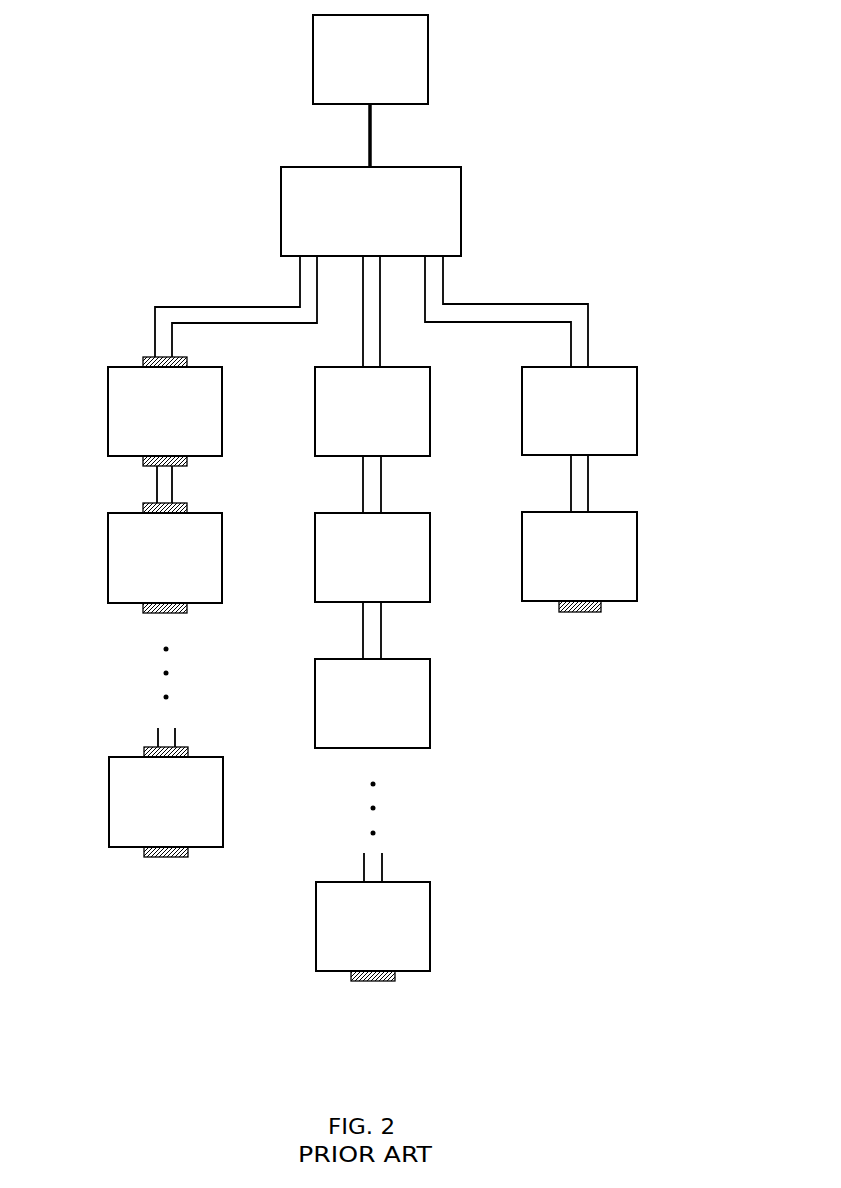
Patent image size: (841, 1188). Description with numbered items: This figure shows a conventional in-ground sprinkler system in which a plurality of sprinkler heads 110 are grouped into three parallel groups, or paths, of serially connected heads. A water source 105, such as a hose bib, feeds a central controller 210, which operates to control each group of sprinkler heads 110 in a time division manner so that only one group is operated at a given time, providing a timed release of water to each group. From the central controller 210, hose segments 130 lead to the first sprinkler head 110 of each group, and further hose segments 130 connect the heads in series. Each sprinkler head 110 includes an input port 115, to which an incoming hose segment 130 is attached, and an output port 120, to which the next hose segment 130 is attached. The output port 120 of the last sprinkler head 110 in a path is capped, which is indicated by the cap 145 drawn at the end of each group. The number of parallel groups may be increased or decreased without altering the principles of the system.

The water source 105 is at (430, 67).
The central controller 210 is at (462, 191).
The hose segments 130 is at (222, 305).
The sprinkler heads 110 is at (223, 402).
The input port 115 is at (143, 362).
The output port 120 is at (188, 459).
The terminal connector 145 is at (163, 858).